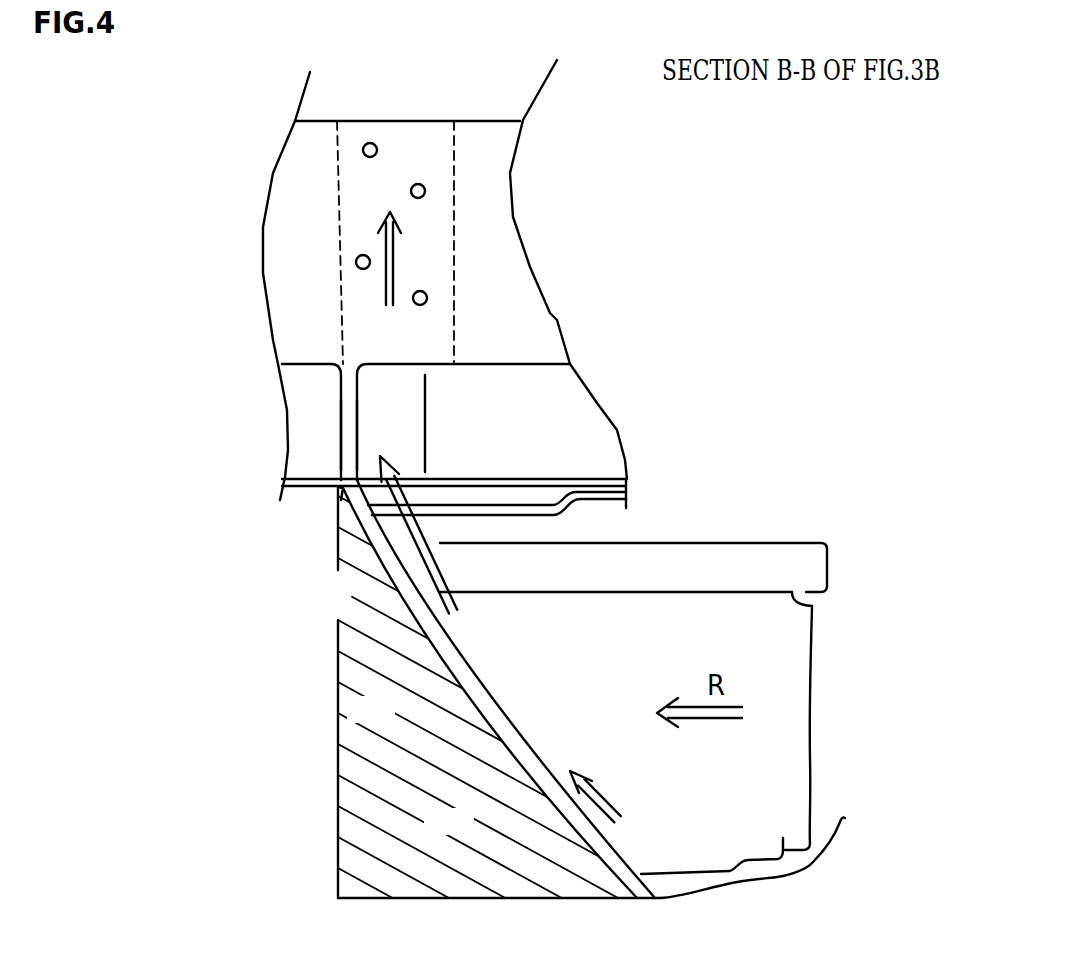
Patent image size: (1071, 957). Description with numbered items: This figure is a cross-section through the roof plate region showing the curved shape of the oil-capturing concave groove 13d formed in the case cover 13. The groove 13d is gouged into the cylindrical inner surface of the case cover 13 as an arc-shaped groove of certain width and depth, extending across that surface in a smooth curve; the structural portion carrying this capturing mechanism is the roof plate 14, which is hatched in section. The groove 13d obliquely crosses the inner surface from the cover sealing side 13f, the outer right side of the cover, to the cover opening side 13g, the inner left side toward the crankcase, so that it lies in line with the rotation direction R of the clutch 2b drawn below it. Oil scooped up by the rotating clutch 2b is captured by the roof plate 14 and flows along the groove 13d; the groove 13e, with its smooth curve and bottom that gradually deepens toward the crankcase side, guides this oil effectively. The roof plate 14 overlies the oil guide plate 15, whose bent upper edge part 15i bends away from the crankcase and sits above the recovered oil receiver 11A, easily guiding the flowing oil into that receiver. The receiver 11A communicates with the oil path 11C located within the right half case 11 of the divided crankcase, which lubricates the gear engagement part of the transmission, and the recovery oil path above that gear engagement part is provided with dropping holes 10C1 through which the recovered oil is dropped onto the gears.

The clutch 2b is at (782, 638).
The dropping hole 10C1 is at (362, 146).
The right half case 11 is at (292, 187).
The recovered oil receiver 11A is at (378, 422).
The oil path 11C is at (363, 281).
The case cover 13 is at (350, 609).
The concave groove 13d is at (453, 670).
The groove 13e is at (533, 780).
The cover sealing side 13f is at (593, 845).
The cover opening side 13g is at (333, 492).
The roof plate 14 is at (377, 648).
The oil guide plate 15 is at (540, 495).
The bent upper edge part 15i is at (477, 503).